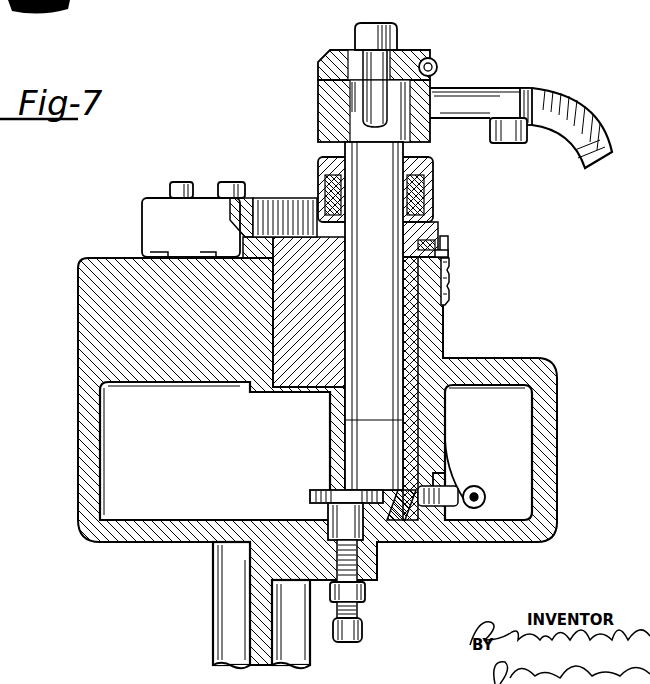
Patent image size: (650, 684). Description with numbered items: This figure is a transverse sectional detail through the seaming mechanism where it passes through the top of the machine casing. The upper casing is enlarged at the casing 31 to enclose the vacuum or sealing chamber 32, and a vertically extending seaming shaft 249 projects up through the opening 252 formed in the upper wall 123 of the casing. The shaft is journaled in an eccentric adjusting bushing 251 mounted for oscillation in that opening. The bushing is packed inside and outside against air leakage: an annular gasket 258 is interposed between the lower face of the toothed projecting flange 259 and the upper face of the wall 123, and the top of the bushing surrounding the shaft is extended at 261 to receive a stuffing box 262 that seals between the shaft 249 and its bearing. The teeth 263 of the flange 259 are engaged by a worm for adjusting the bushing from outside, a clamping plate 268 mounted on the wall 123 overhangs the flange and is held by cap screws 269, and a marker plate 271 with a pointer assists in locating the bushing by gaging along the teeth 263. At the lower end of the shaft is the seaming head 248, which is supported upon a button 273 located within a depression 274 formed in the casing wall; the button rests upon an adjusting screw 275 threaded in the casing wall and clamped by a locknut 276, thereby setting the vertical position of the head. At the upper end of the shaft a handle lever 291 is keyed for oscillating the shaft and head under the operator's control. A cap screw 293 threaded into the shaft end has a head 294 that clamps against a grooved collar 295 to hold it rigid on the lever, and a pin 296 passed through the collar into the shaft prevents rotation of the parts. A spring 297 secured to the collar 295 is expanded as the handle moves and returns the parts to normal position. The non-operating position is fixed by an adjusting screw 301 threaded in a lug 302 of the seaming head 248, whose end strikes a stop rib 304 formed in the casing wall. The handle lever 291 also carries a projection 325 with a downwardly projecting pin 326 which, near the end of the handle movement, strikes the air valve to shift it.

The enlarged casing 31 is at (88, 455).
The vacuum or sealing chamber 32 is at (112, 493).
The upper wall of the casing 123 is at (96, 296).
The seaming head 248 is at (440, 421).
The seaming shaft 249 is at (398, 325).
The eccentric adjusting bushing 251 is at (301, 243).
The opening 252 is at (430, 351).
The annular gasket 258 is at (448, 256).
The toothed projecting flange 259 is at (446, 236).
The extended part of the bushing top 261 is at (433, 210).
The stuffing box 262 is at (433, 176).
The teeth 263 is at (448, 247).
The clamping plate 268 is at (191, 227).
The cap screws 269 is at (232, 182).
The marker plate 271 is at (450, 268).
The button 273 is at (340, 507).
The depression 274 is at (377, 543).
The adjusting screw 275 is at (358, 612).
The locknut 276 is at (366, 592).
The handle lever 291 is at (574, 120).
The cap screw 293 is at (378, 63).
The head of the cap screw 294 is at (396, 36).
The grooved collar 295 is at (332, 56).
The pin 296 is at (350, 78).
The spring 297 is at (438, 66).
The adjusting screw 301 is at (468, 500).
The lug 302 is at (452, 512).
The stop rib 304 is at (410, 512).
The projection 325 is at (529, 90).
The pin 326 is at (509, 146).